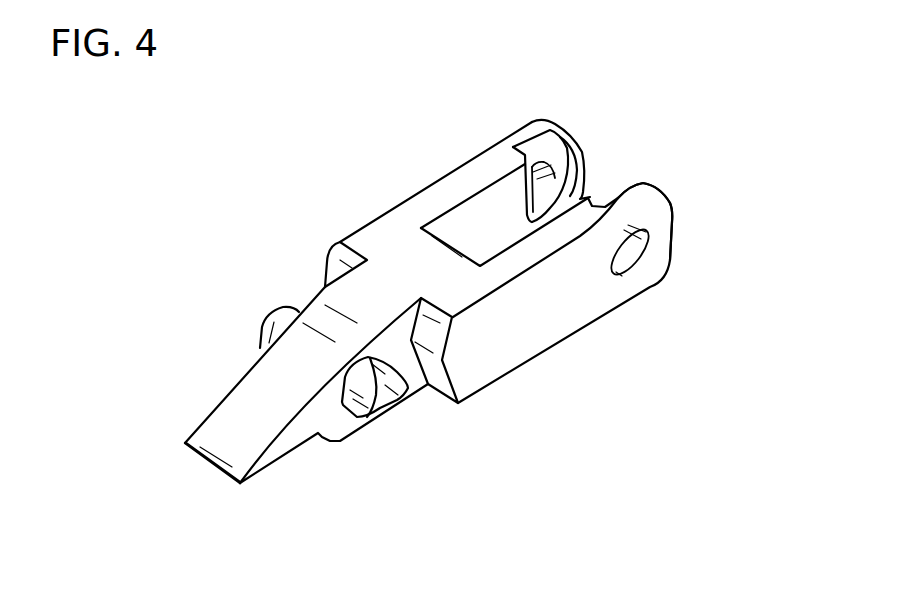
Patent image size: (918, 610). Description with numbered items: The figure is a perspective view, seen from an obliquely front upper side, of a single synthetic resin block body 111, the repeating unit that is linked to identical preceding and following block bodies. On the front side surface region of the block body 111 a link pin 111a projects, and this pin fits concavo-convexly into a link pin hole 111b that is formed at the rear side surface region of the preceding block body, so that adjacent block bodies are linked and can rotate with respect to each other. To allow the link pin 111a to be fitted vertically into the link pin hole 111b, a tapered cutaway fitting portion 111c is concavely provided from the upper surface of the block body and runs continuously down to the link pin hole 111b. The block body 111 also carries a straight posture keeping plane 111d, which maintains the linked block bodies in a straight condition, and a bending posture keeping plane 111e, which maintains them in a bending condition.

The synthetic resin block body 111 is at (218, 149).
The link pin 111a is at (273, 322).
The link pin hole 111b is at (545, 201).
The tapered cutaway fitting portion 111c is at (540, 147).
The straight posture keeping plane 111d is at (278, 463).
The bending posture keeping plane 111e is at (440, 392).